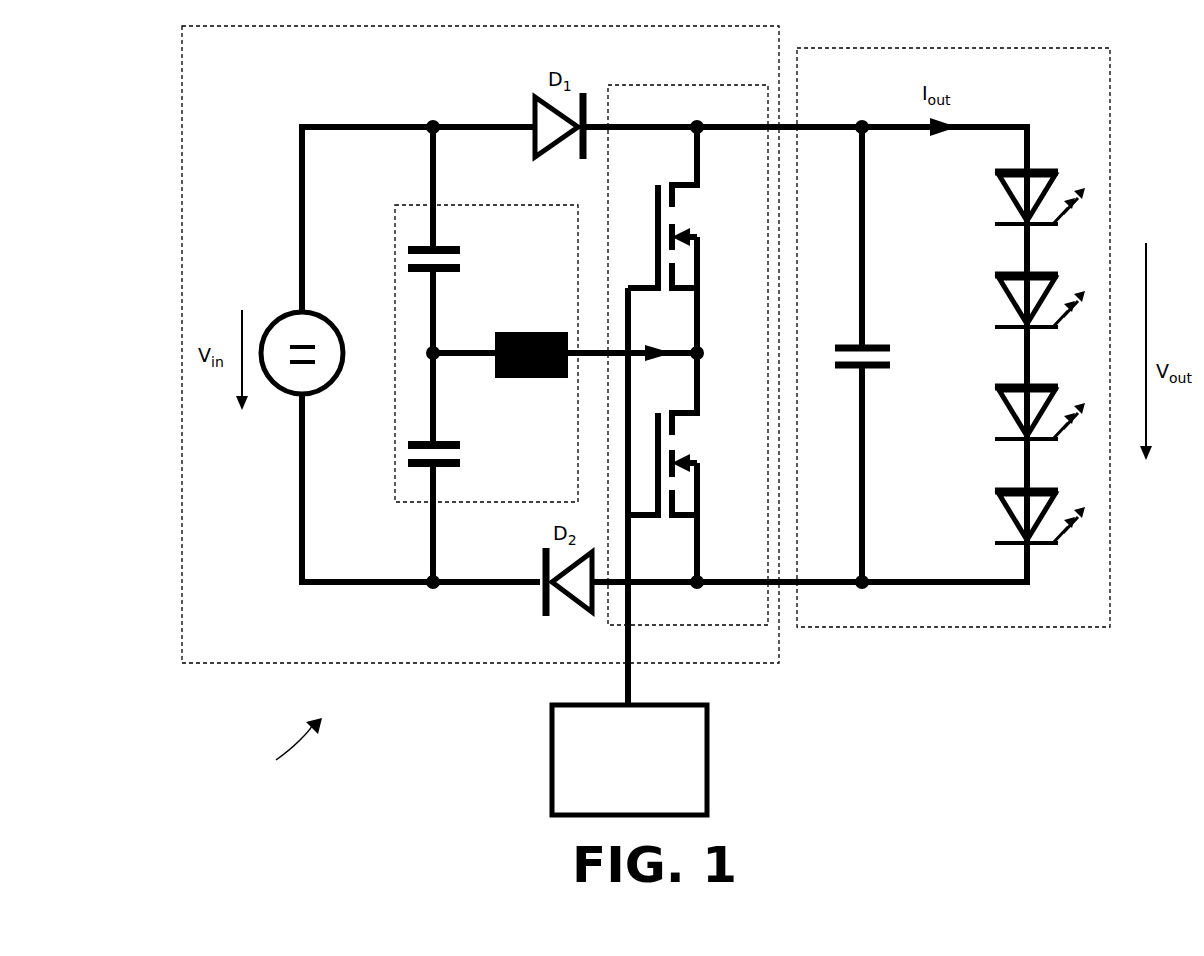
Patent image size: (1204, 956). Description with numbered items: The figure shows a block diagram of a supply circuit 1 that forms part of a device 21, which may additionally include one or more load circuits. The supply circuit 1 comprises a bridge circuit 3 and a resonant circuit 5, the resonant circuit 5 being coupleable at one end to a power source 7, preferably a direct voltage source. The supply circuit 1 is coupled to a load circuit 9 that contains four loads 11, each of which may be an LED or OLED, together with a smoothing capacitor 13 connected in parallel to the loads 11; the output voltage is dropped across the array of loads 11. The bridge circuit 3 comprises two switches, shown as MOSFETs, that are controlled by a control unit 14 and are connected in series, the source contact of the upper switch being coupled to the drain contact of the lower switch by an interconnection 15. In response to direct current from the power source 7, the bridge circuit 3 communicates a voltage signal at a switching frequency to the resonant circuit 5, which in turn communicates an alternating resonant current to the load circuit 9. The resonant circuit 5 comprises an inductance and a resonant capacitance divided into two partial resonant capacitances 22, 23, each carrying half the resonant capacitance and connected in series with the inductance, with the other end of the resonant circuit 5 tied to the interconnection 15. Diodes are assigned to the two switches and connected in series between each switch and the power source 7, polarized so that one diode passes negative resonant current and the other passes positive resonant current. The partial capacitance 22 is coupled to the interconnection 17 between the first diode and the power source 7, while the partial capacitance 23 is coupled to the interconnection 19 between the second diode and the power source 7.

The supply circuit 1 is at (182, 430).
The bridge circuit 3 is at (698, 85).
The resonant circuit 5 is at (460, 205).
The power source 7 is at (290, 312).
The load circuit 9 is at (1110, 147).
The load 11 is at (1036, 168).
The smoothing capacitor 13 is at (876, 332).
The control unit 14 is at (550, 750).
The interconnection 15 is at (705, 318).
The interconnection 17 is at (300, 170).
The interconnection 19 is at (298, 534).
The device 21 is at (283, 752).
The partial resonant capacitance 22 is at (402, 253).
The partial resonant capacitance 23 is at (402, 453).